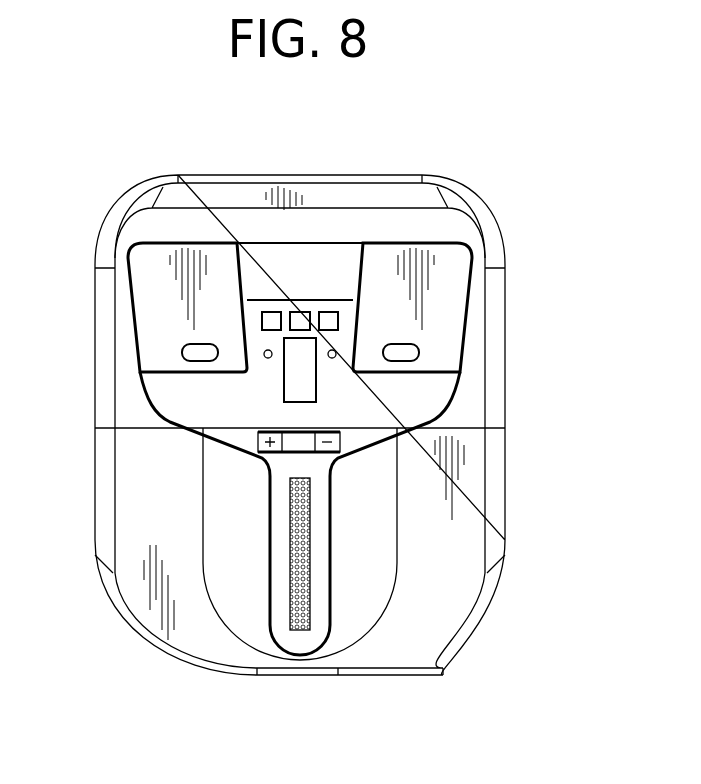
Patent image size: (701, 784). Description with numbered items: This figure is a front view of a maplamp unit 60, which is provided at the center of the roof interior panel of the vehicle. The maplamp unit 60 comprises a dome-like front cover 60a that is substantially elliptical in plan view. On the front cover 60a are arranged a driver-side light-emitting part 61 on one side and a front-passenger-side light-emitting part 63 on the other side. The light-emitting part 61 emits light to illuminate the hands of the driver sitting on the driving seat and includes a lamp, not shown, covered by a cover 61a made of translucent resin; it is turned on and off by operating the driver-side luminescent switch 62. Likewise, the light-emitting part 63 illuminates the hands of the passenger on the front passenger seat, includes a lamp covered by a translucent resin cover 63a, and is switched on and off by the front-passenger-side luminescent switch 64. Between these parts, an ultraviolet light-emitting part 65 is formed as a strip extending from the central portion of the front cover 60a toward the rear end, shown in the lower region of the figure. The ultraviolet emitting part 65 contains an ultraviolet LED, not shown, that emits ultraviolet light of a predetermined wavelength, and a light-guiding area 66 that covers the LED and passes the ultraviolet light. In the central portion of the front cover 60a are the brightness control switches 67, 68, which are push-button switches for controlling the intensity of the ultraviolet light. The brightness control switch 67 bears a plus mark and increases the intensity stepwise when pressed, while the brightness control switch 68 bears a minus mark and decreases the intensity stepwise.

The maplamp unit 60 is at (427, 165).
The front cover 60a is at (345, 207).
The driver-side light-emitting part 61 is at (157, 283).
The cover 61a is at (160, 309).
The driver-side luminescent switch 62 is at (182, 355).
The front-passenger-side light-emitting part 63 is at (445, 285).
The cover 63a is at (440, 310).
The front-passenger-side luminescent switch 64 is at (419, 355).
The ultraviolet light-emitting part 65 is at (306, 628).
The light-guiding area 66 is at (306, 598).
The brightness control switch 67 is at (268, 432).
The brightness control switch 68 is at (333, 432).